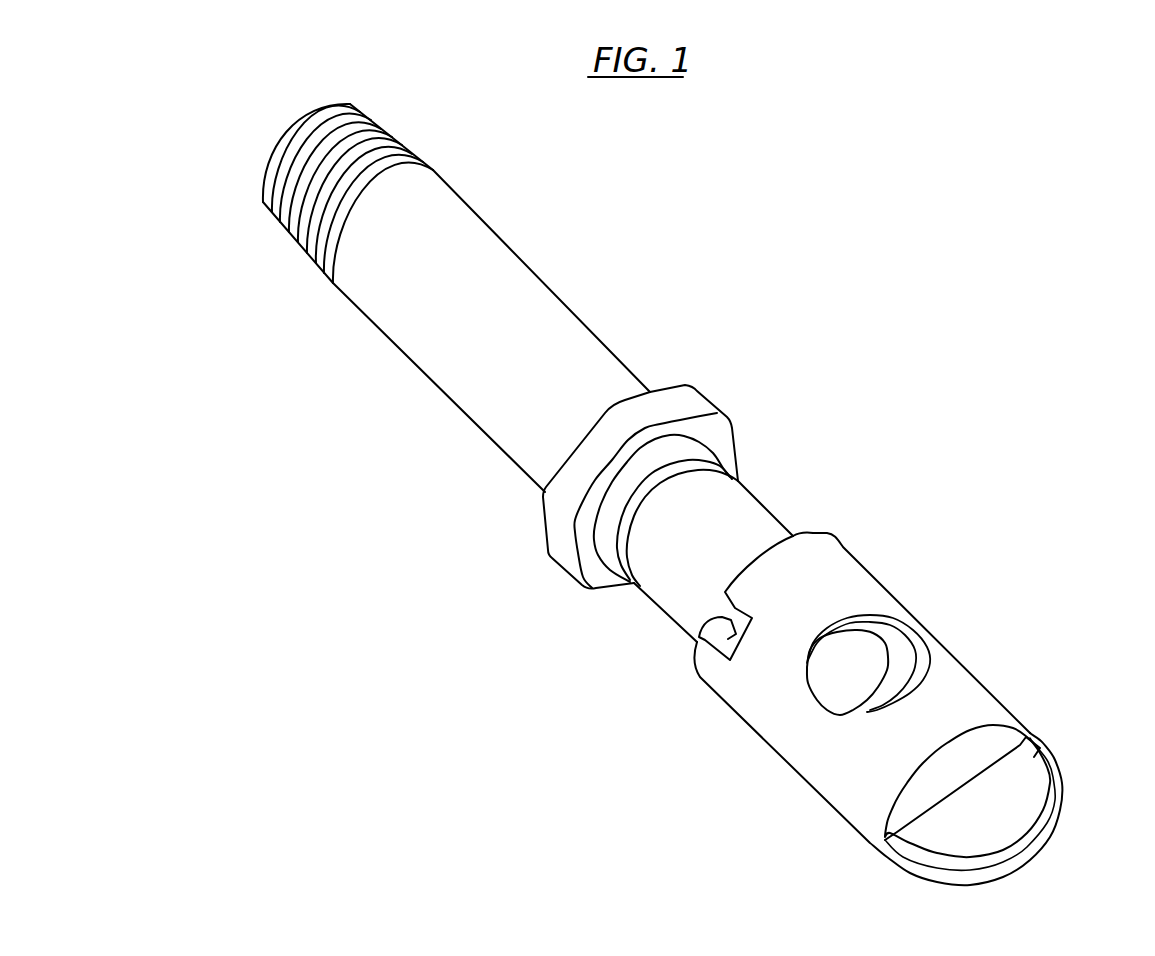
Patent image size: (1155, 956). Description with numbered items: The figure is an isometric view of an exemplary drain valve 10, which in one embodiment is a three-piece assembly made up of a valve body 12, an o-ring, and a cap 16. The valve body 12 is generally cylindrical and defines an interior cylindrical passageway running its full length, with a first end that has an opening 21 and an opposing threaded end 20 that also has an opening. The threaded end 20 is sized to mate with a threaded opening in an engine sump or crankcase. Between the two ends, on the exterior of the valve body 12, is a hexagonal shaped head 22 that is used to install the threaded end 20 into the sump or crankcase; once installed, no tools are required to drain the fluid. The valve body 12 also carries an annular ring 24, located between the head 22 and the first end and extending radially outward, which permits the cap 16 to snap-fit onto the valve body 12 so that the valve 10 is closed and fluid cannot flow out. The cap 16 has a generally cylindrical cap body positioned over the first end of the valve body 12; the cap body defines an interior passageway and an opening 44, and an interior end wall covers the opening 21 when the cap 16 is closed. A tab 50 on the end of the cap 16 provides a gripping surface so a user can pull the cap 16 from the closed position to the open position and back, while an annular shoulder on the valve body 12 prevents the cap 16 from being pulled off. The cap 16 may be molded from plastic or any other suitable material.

The drain valve 10 is at (738, 297).
The valve body 12 is at (487, 275).
The cap 16 is at (978, 700).
The threaded end 20 is at (290, 240).
The opening 21 is at (858, 655).
The hexagonal shaped head 22 is at (690, 403).
The annular ring 24 is at (720, 467).
The opening 44 is at (913, 657).
The tab 50 is at (1023, 792).